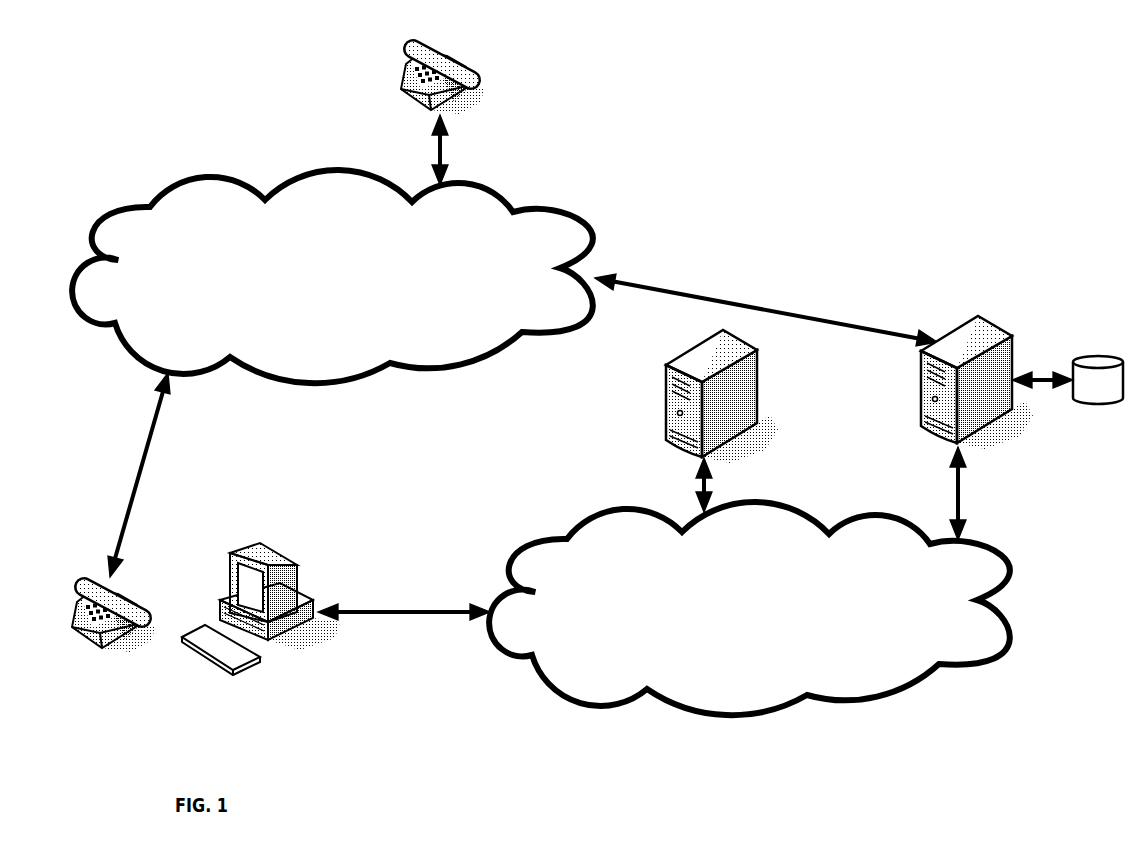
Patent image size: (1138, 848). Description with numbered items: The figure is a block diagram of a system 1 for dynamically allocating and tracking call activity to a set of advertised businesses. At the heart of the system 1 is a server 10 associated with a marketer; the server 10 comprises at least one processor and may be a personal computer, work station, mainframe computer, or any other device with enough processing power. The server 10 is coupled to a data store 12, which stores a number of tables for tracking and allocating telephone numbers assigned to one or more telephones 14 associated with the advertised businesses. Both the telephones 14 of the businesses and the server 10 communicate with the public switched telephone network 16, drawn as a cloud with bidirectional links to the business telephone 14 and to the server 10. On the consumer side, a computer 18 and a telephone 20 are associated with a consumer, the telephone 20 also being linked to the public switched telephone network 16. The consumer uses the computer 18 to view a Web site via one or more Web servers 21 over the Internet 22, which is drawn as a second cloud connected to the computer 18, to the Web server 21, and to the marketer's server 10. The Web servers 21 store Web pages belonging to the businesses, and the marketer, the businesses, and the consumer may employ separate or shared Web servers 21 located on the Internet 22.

The system 1 is at (88, 60).
The server 10 is at (978, 318).
The data store 12 is at (1098, 355).
The telephone 14 is at (452, 52).
The public switched telephone network 16 is at (220, 175).
The computer 18 is at (282, 555).
The telephone 20 is at (128, 593).
The Web server 21 is at (672, 360).
The Internet 22 is at (570, 533).